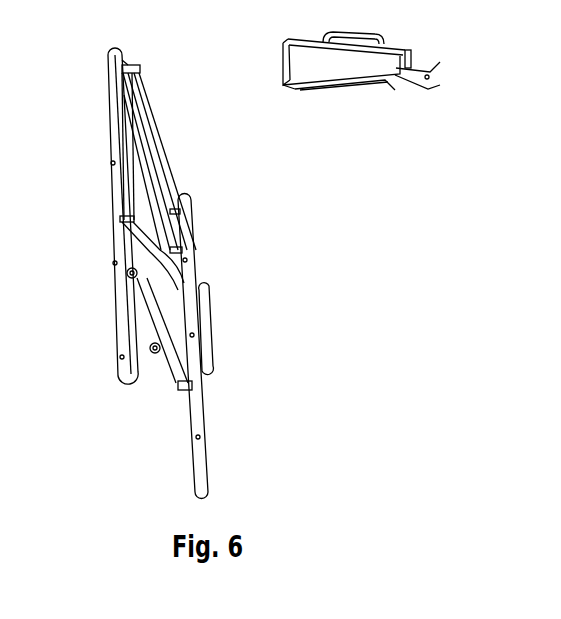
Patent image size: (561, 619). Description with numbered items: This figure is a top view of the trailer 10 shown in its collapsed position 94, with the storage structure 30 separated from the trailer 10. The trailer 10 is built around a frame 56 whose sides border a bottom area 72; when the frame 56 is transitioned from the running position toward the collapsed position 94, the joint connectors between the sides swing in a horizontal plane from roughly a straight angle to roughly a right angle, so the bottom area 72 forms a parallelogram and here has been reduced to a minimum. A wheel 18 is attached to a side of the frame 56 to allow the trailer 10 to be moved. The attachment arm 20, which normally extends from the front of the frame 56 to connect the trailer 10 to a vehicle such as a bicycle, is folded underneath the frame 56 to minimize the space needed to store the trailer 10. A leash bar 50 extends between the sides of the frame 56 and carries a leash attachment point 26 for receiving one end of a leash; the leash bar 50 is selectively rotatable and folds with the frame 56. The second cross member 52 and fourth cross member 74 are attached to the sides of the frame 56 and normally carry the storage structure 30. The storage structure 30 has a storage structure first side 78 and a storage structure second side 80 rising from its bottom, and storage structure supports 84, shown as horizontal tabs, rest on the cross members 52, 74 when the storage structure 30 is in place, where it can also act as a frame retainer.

The trailer 10 is at (425, 420).
The wheel 18 is at (212, 322).
The attachment arm 20 is at (145, 238).
The leash attachment point 26 is at (152, 346).
The storage structure 30 is at (368, 79).
The leash bar 50 is at (160, 352).
The second cross member 52 is at (165, 164).
The frame 56 is at (113, 110).
The bottom area 72 is at (145, 203).
The fourth cross member 74 is at (145, 140).
The storage structure first side 78 is at (323, 55).
The storage structure second side 80 is at (390, 91).
The storage structure supports 84 is at (397, 68).
The collapsed position 94 is at (375, 272).